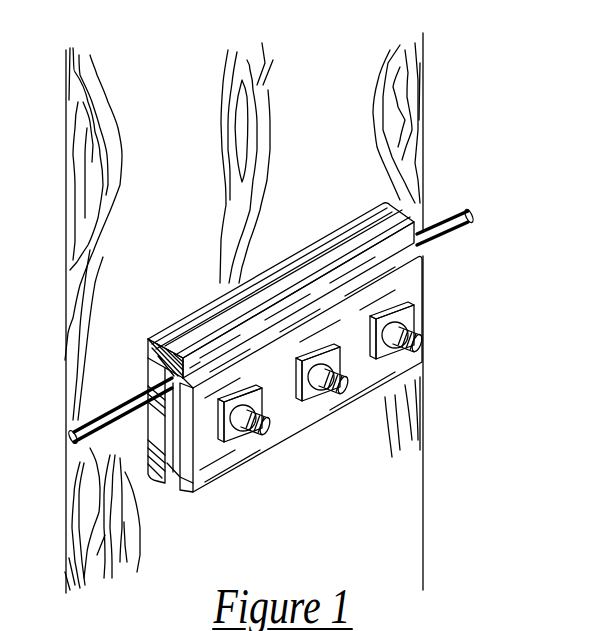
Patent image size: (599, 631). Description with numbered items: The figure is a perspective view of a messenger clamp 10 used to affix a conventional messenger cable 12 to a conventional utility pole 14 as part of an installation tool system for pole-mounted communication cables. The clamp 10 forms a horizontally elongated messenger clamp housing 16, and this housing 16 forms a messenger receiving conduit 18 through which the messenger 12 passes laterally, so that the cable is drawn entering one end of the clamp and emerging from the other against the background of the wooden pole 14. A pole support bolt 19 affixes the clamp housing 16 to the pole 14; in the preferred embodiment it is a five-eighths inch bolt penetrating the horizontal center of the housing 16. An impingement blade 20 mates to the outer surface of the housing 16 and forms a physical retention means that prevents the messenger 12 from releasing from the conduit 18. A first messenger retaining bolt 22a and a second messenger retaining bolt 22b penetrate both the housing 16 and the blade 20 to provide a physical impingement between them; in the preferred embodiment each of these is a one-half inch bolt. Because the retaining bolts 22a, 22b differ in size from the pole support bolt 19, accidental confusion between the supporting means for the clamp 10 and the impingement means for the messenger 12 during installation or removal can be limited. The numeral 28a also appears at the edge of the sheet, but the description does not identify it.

The messenger clamp 10 is at (460, 128).
The messenger cable 12 is at (468, 236).
The utility pole 14 is at (88, 148).
The messenger clamp housing 16 is at (413, 213).
The messenger receiving conduit 18 is at (170, 377).
The pole support bolt 19 is at (334, 388).
The impingement blade 20 is at (203, 488).
The first messenger retaining bolt 22a is at (230, 443).
The second messenger retaining bolt 22b is at (408, 331).
The element 28a is at (598, 628).